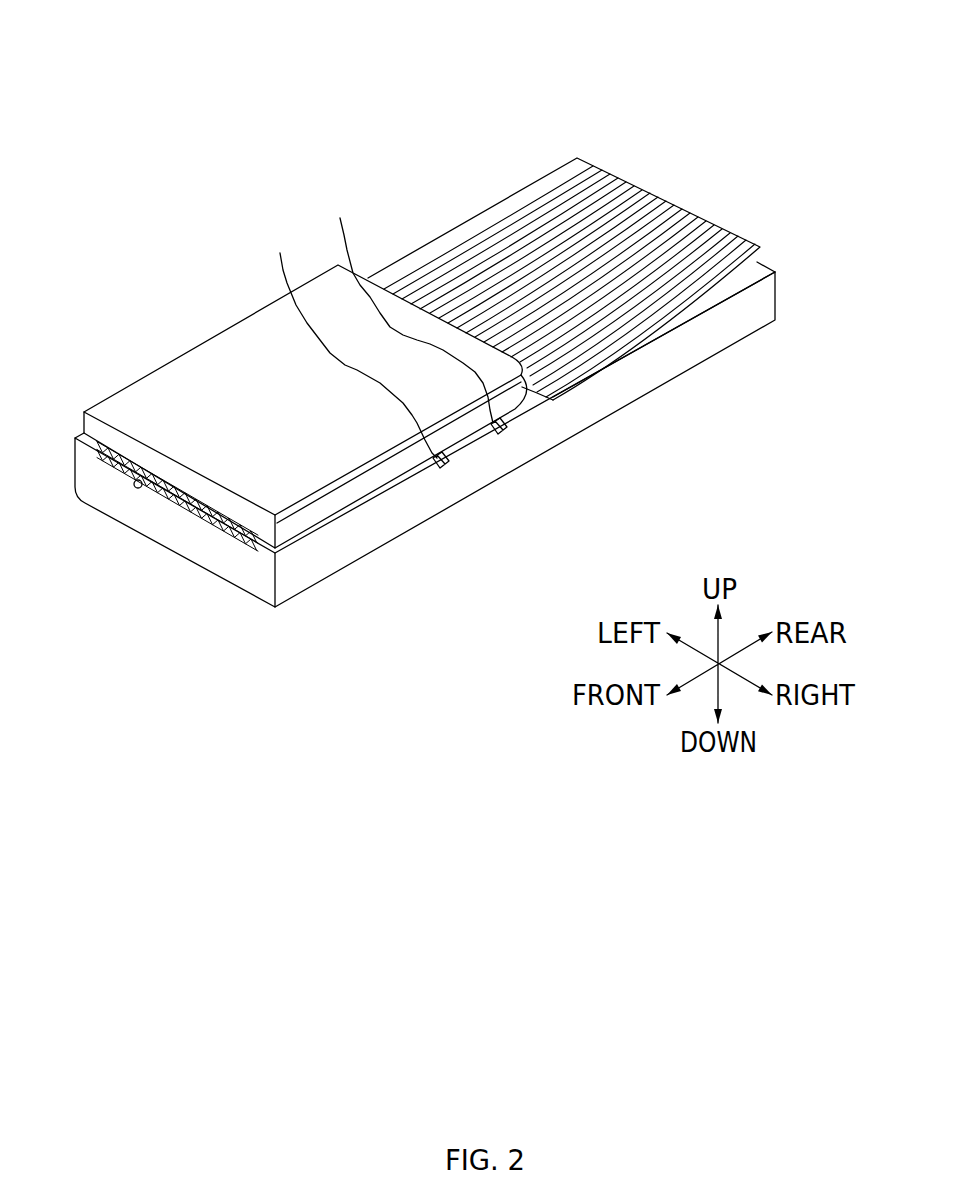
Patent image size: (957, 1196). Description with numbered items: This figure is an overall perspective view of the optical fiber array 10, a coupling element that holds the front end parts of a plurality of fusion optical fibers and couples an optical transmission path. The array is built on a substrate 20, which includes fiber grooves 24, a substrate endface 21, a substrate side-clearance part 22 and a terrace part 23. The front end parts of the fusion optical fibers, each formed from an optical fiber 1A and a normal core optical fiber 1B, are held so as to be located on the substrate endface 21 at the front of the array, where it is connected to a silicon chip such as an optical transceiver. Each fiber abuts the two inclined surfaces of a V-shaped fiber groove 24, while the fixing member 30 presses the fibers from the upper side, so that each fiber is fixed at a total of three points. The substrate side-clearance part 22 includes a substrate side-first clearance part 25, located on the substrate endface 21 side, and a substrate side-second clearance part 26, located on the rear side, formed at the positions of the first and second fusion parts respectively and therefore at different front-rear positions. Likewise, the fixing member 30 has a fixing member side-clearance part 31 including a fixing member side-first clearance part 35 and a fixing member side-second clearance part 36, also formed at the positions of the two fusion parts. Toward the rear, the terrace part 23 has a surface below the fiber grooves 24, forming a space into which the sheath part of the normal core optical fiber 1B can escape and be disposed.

The optical fiber array 10 is at (266, 92).
The optical fiber 1A is at (253, 538).
The normal core optical fiber 1B is at (757, 243).
The substrate 20 is at (370, 527).
The substrate endface 21 is at (253, 583).
The substrate side-clearance part 22 is at (613, 513).
The terrace part 23 is at (643, 337).
The fiber grooves 24 is at (152, 474).
The substrate side-first clearance part 25 is at (447, 470).
The substrate side-second clearance part 26 is at (505, 430).
The fixing member 30 is at (228, 365).
The fixing member side-clearance part 31 is at (348, 174).
The fixing member side-first clearance part 35 is at (351, 340).
The fixing member side-second clearance part 36 is at (409, 307).